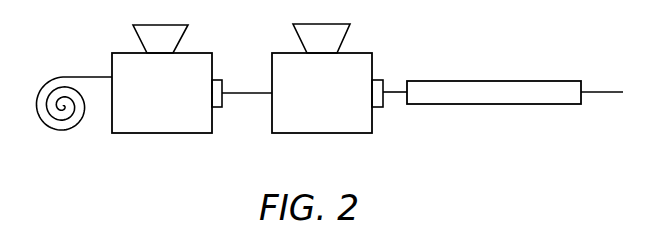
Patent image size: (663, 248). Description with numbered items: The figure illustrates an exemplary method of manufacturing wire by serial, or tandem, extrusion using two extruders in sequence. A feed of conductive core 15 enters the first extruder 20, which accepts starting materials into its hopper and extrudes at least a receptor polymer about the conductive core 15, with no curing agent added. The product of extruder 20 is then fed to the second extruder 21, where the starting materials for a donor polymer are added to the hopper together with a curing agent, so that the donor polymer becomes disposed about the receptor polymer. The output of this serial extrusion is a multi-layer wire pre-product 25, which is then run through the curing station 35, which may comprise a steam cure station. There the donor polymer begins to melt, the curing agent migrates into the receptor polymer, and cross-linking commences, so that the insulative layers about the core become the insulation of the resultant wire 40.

The conductive core 15 is at (66, 134).
The extruder 20 is at (177, 104).
The extruder 21 is at (332, 105).
The multi-layer wire pre-product 25 is at (393, 90).
The curing station 35 is at (502, 105).
The resultant wire 40 is at (602, 92).